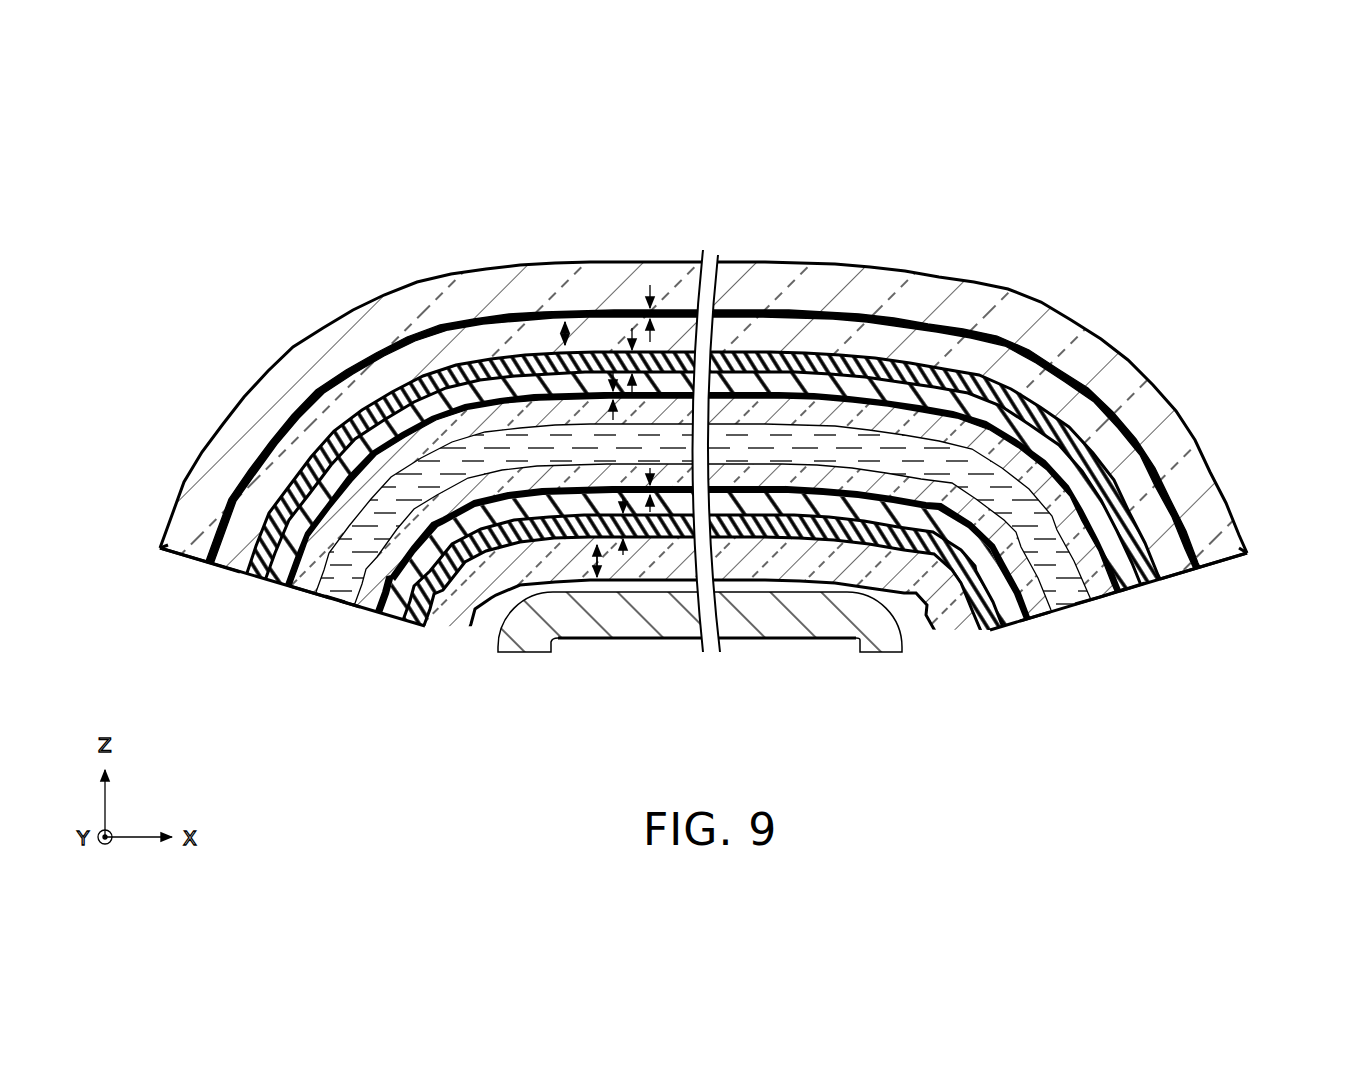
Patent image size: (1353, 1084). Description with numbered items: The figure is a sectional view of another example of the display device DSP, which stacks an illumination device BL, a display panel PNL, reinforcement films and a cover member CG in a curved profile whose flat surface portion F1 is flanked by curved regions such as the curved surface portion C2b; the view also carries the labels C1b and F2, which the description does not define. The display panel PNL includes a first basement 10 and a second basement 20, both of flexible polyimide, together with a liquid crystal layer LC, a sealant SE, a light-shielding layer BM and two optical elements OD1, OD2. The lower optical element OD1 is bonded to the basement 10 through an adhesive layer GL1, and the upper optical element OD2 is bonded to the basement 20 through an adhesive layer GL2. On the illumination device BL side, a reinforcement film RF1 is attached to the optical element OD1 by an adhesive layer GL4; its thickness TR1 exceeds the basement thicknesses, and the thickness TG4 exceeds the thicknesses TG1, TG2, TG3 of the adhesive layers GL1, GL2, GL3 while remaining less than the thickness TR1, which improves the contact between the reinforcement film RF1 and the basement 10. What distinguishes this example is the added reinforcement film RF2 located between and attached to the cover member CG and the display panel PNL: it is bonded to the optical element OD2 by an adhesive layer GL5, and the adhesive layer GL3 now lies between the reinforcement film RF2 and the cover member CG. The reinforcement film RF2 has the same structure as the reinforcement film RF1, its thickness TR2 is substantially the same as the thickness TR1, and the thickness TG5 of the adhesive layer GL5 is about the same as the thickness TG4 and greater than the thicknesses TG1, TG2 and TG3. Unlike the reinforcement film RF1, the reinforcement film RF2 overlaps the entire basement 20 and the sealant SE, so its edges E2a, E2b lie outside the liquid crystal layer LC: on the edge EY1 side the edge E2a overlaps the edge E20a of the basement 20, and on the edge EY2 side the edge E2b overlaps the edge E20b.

The display device DSP is at (297, 222).
The cover member CG is at (1163, 430).
The first curved surface of cover glass C1b is at (1087, 350).
The curved surface portion C2b is at (1053, 451).
The display panel PNL is at (1074, 475).
The adhesive layer GL3 is at (1150, 453).
The reinforcement film RF2 is at (1183, 502).
The adhesive layer GL5 is at (1183, 543).
The liquid crystal layer LC is at (856, 437).
The flat surface portion F1 is at (758, 286).
The second film F2 is at (767, 382).
The thickness of reinforcement film RF2 TR2 is at (562, 330).
The thickness of adhesive layer GL2 TG2 is at (613, 372).
The thickness of adhesive layer GL5 TG5 is at (632, 328).
The thickness of adhesive layer GL3 TG3 is at (650, 285).
The thickness of reinforcement film RF1 TR1 is at (597, 577).
The thickness of adhesive layer GL4 TG4 is at (623, 555).
The thickness of adhesive layer GL1 TG1 is at (650, 512).
The illumination device BL is at (737, 616).
The reinforcement film RF1 is at (783, 558).
The adhesive layer GL4 is at (835, 533).
The optical element OD1 is at (1003, 627).
The optical element OD2 is at (1127, 577).
The adhesive layer GL1 is at (1035, 618).
The adhesive layer GL2 is at (1110, 573).
The basement 10 is at (1060, 608).
The basement 20 is at (1103, 580).
The sealant SE is at (343, 602).
The light-shielding layer BM is at (333, 604).
The edge of basement 20 E20a is at (310, 598).
The edge of basement 20 E20b is at (1090, 610).
The edge of reinforcement film RF2 E2a is at (223, 570).
The edge of reinforcement film RF2 E2b is at (1182, 580).
The edge EY1 is at (160, 551).
The edge EY2 is at (1252, 557).